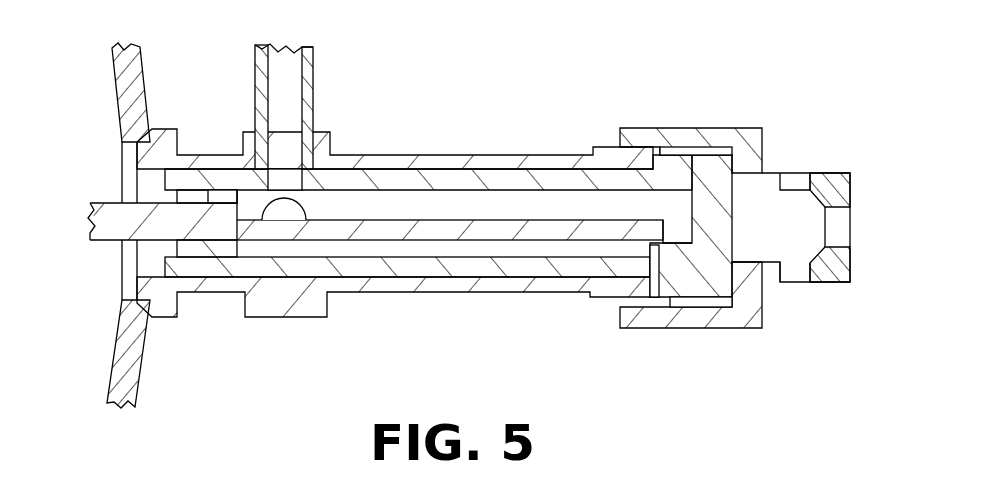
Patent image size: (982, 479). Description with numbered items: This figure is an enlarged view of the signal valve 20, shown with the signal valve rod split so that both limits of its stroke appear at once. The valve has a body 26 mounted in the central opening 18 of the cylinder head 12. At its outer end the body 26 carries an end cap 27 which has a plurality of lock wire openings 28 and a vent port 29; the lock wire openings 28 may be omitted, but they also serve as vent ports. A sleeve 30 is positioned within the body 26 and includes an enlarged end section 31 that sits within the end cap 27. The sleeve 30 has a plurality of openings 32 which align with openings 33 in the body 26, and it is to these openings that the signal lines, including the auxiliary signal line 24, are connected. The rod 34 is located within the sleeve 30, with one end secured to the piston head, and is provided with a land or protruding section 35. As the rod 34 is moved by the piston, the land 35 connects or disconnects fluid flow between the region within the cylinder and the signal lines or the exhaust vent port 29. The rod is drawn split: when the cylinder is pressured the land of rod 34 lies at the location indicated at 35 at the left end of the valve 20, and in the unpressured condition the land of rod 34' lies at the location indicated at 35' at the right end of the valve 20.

The head 12 is at (143, 373).
The central opening 18 is at (125, 173).
The signal valve 20 is at (824, 309).
The auxiliary signal line 24 is at (313, 68).
The body 26 is at (433, 293).
The end cap 27 is at (727, 328).
The lock wire openings 28 is at (793, 182).
The vent port 29 is at (833, 234).
The sleeve 30 is at (540, 166).
The enlarged end section 31 is at (665, 172).
The openings 32 is at (284, 210).
The openings 33 is at (282, 177).
The rod 34 is at (143, 245).
The rod 34' is at (464, 287).
The land 35 is at (215, 138).
The land 35' is at (626, 315).